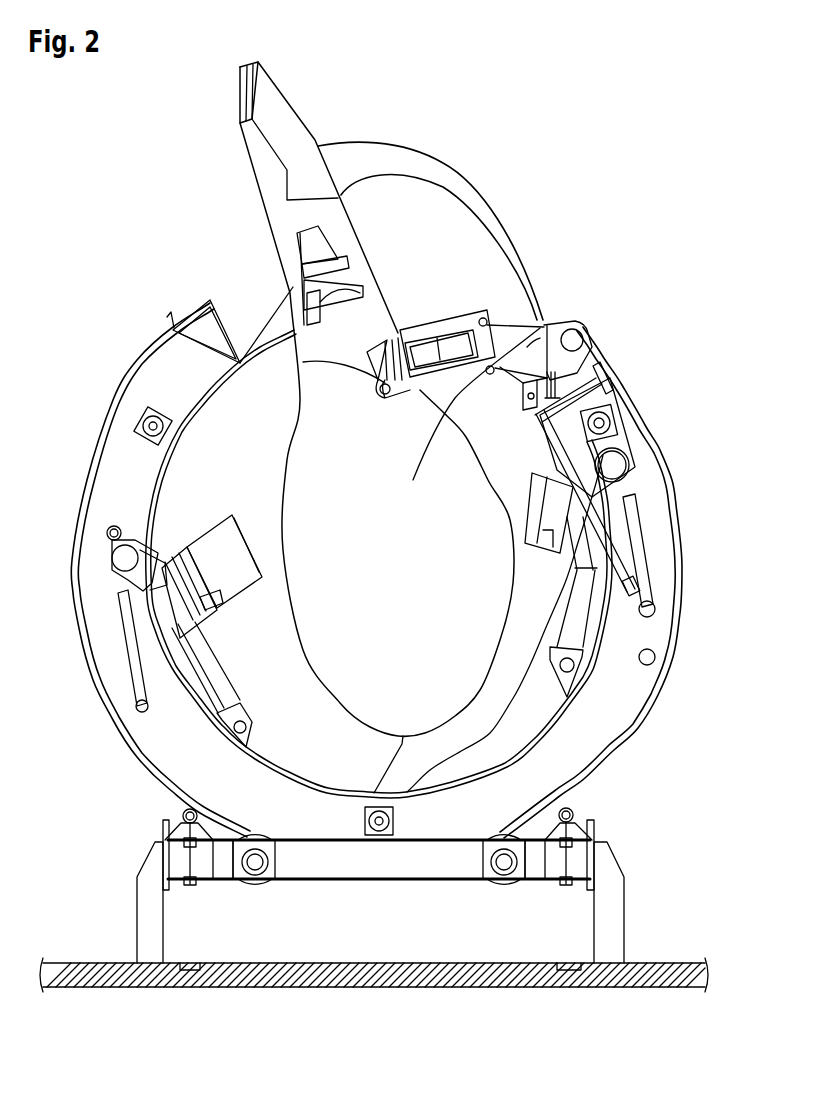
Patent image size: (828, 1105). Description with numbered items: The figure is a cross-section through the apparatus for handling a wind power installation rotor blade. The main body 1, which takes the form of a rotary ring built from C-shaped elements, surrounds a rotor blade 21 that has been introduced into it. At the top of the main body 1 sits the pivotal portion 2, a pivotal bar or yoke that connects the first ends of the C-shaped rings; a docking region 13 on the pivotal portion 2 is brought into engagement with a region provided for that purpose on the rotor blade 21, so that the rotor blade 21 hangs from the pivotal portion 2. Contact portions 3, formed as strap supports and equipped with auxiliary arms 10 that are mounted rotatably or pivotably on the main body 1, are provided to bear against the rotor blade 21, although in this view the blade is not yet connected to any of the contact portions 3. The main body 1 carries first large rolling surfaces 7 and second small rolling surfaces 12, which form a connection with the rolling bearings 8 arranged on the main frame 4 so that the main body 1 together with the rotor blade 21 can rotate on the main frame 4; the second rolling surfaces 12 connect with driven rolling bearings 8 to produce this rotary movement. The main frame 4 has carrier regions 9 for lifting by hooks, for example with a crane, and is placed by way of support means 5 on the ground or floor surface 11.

The main body 1 is at (162, 388).
The pivotal portion 2 is at (545, 325).
The contact portions 3 is at (217, 557).
The main frame 4 is at (426, 858).
The support means 5 is at (147, 907).
The first rolling surfaces 7 is at (685, 560).
The rolling bearings 8 is at (253, 883).
The carrier regions 9 is at (185, 810).
The auxiliary arms 10 is at (193, 667).
The floor surface 11 is at (678, 975).
The second rolling surfaces 12 is at (599, 658).
The docking region 13 is at (413, 473).
The rotor blade 21 is at (527, 347).